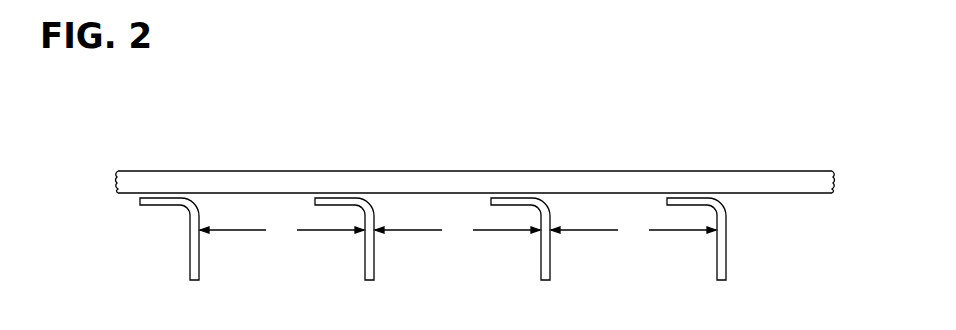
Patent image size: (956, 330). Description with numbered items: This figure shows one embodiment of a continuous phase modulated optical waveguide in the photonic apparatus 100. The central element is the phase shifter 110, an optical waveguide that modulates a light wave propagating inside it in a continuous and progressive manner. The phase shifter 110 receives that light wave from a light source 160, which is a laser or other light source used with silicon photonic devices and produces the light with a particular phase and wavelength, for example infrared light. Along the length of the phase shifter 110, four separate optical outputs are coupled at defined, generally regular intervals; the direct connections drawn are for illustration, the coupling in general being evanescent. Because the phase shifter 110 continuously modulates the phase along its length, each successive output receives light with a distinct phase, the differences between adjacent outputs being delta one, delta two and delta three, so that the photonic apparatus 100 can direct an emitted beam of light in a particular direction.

The photonic apparatus 100 is at (199, 127).
The phase shifter 110 is at (475, 182).
The light source 160 is at (115, 182).